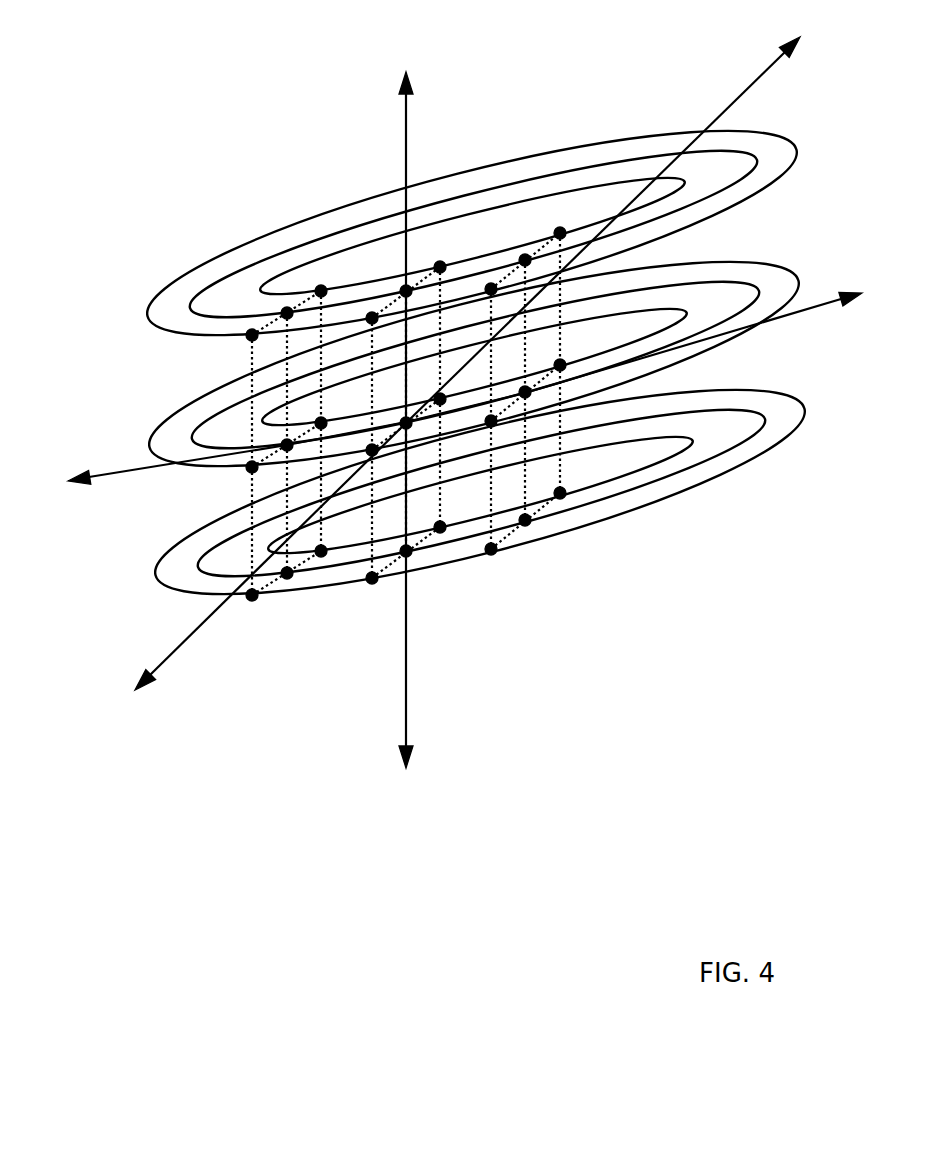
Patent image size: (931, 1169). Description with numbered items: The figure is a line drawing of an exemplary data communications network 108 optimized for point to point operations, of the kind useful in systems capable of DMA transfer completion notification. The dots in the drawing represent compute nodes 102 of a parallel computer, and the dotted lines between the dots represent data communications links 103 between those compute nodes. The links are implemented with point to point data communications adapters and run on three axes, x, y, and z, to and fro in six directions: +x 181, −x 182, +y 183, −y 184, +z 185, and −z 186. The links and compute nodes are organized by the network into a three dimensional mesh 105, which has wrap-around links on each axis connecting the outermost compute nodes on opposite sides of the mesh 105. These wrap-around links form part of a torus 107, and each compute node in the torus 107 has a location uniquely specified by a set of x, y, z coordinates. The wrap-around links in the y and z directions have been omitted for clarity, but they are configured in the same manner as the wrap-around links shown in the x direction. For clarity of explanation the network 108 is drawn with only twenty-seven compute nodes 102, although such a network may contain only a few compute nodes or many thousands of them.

The compute nodes 102 is at (491, 551).
The data communications links 103 is at (252, 364).
The three dimensional mesh 105 is at (558, 232).
The torus 107 is at (230, 235).
The data communications network 108 is at (300, 847).
The +x direction 181 is at (905, 326).
The −x direction 182 is at (37, 523).
The +y direction 183 is at (815, 64).
The −y direction 184 is at (131, 742).
The +z direction 185 is at (394, 64).
The −z direction 186 is at (394, 835).